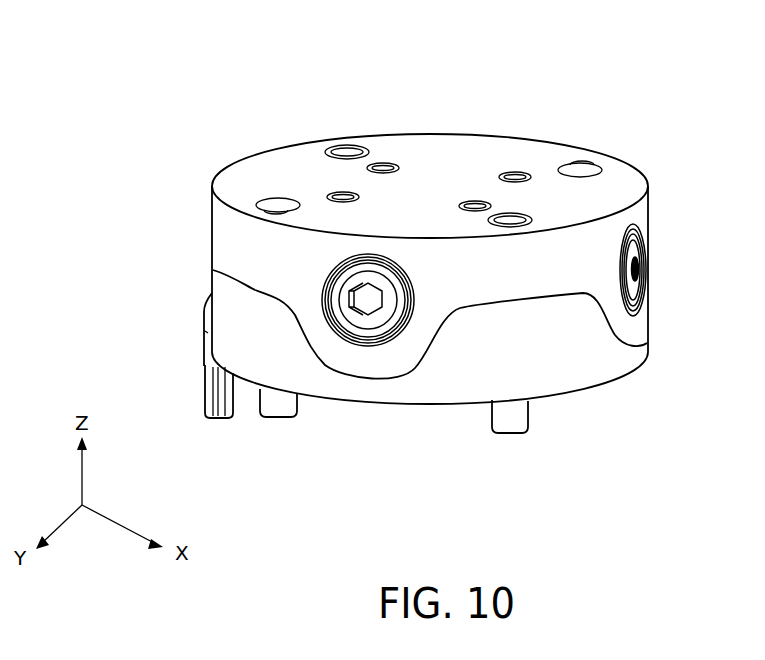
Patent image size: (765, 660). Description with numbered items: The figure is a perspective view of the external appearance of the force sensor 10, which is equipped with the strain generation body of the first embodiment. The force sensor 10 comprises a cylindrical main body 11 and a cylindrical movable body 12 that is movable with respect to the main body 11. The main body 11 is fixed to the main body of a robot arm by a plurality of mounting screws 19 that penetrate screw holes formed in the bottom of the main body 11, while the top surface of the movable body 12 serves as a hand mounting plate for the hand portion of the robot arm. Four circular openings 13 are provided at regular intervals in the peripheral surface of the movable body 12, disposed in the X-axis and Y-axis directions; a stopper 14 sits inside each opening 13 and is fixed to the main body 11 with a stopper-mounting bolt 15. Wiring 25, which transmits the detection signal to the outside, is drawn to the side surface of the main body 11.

The force sensor 10 is at (284, 86).
The main body 11 is at (613, 380).
The movable body 12 is at (625, 178).
The circular opening 13 is at (524, 343).
The stopper 14 is at (385, 257).
The stopper-mounting bolt 15 is at (383, 293).
The mounting screw 19 is at (278, 412).
The wiring 25 is at (205, 397).